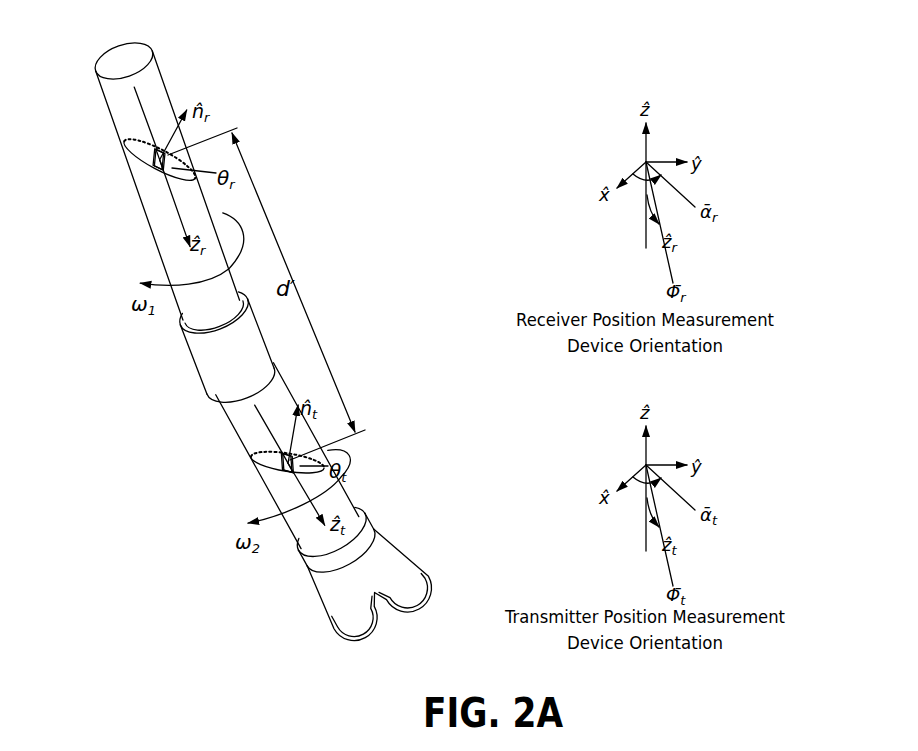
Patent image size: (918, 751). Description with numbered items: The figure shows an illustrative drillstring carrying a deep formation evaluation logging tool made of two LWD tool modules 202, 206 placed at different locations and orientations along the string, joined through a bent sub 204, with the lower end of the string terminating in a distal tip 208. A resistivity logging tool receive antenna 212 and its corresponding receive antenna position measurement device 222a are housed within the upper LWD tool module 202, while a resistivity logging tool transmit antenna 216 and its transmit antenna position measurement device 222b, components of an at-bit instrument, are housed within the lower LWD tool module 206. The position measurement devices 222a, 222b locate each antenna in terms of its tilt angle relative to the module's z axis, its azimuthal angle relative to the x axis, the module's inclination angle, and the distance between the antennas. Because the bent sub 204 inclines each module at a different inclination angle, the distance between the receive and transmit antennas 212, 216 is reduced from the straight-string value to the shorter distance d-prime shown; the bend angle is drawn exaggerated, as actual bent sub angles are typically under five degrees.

The LWD tool module 202 is at (157, 63).
The bent sub 204 is at (189, 351).
The LWD tool module 206 is at (297, 378).
The bifurcated distal tip 208 is at (398, 549).
The resistivity logging tool receive antenna 212 is at (149, 167).
The resistivity logging tool transmit antenna 216 is at (276, 461).
The receive antenna position measurement device 222a is at (155, 169).
The transmit antenna position measurement device 222b is at (266, 463).